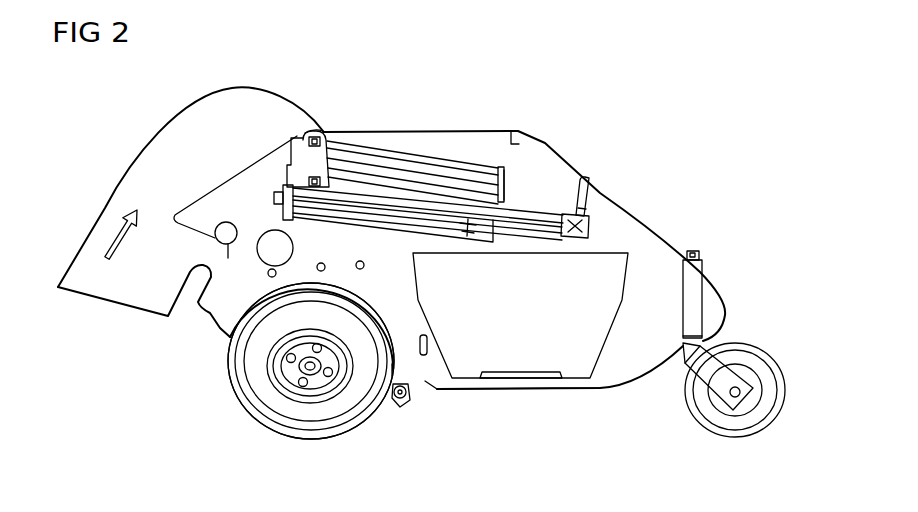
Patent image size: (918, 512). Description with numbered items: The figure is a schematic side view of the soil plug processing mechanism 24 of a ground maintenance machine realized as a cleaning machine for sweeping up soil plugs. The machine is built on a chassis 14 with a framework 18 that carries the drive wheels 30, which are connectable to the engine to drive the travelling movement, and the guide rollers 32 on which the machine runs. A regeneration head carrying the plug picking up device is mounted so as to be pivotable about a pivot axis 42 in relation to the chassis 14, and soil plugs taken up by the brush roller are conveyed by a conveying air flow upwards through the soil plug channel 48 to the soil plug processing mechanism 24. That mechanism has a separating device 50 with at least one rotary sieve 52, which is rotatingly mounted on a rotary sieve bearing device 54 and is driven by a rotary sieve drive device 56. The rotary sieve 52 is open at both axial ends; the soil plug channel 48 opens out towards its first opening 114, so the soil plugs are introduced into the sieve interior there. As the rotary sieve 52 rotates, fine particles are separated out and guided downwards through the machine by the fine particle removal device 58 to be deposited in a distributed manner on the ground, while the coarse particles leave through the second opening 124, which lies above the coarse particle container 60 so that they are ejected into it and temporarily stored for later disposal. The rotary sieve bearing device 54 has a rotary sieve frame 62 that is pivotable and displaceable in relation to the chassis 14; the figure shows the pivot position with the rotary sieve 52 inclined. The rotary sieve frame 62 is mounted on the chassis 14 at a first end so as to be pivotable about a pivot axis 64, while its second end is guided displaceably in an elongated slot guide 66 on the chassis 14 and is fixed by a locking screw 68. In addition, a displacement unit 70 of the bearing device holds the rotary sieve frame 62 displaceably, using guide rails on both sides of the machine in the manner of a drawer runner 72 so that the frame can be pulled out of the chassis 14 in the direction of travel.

The chassis 14 is at (437, 389).
The framework 18 is at (380, 423).
The soil plug processing mechanism 24 is at (130, 132).
The drive wheels 30 is at (263, 397).
The guide rollers 32 is at (752, 353).
The pivot axis 42 is at (399, 404).
The soil plug channel 48 is at (107, 235).
The separating device 50 is at (432, 142).
The rotary sieve 52 is at (513, 147).
The rotary sieve bearing device 54 is at (323, 119).
The rotary sieve drive device 56 is at (261, 195).
The fine particle removal device 58 is at (322, 254).
The coarse particle container 60 is at (590, 330).
The rotary sieve frame 62 is at (512, 195).
The pivot axis 64 is at (322, 132).
The elongated slot guide 66 is at (590, 197).
The locking screw 68 is at (590, 228).
The displacement unit 70 is at (527, 234).
The drawer runner 72 is at (443, 200).
The first opening 114 is at (280, 160).
The second opening 124 is at (522, 191).